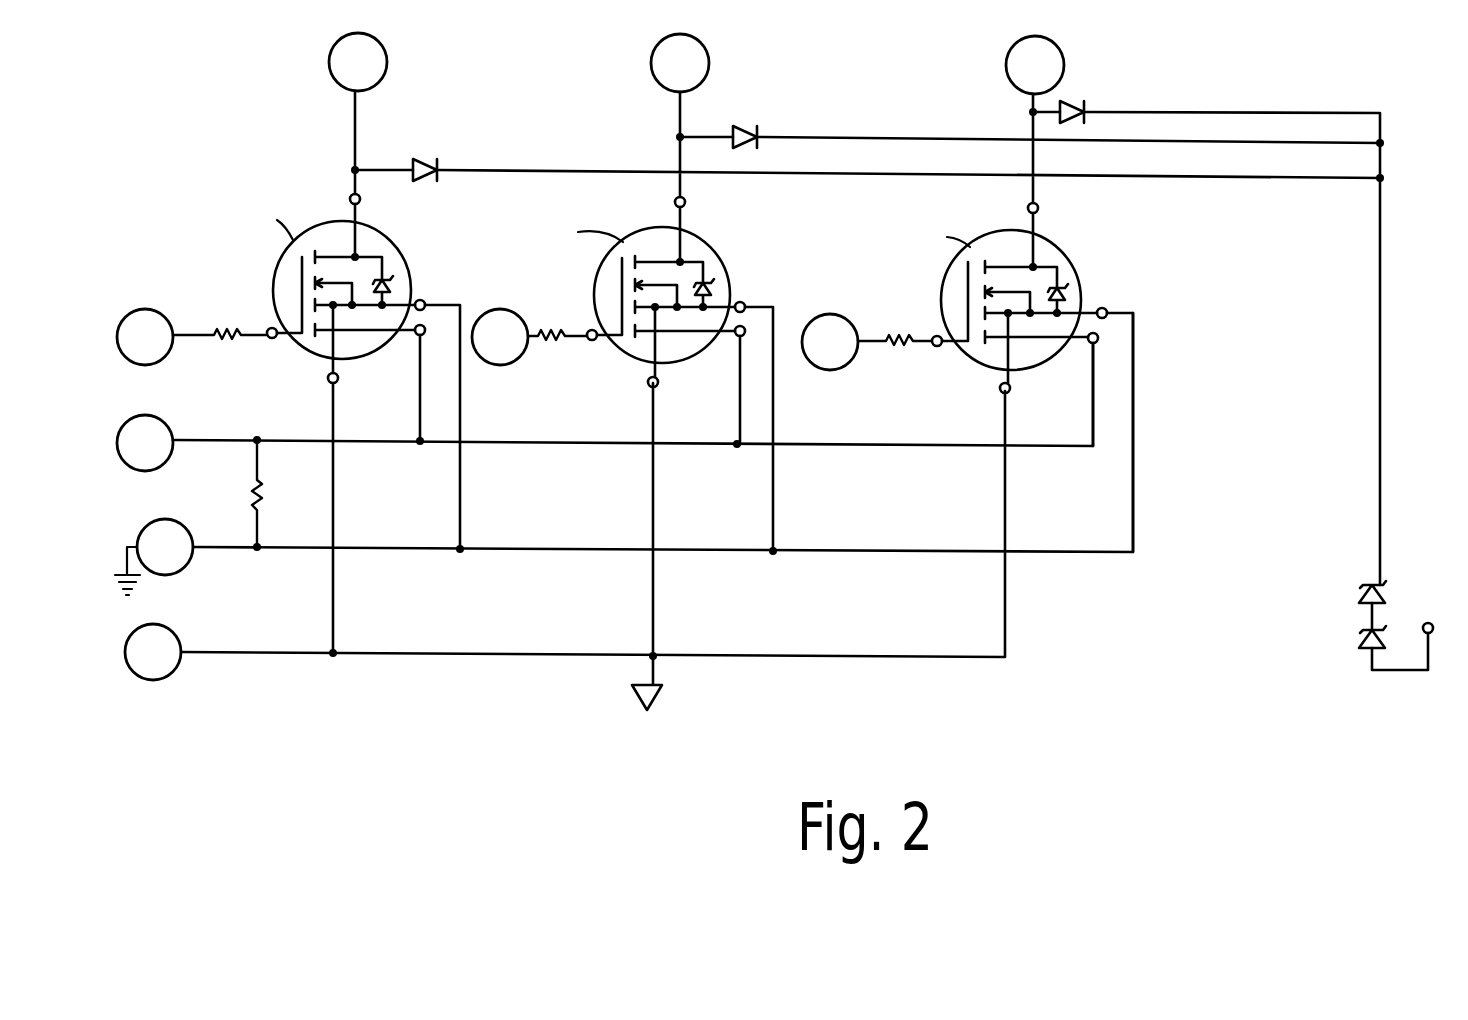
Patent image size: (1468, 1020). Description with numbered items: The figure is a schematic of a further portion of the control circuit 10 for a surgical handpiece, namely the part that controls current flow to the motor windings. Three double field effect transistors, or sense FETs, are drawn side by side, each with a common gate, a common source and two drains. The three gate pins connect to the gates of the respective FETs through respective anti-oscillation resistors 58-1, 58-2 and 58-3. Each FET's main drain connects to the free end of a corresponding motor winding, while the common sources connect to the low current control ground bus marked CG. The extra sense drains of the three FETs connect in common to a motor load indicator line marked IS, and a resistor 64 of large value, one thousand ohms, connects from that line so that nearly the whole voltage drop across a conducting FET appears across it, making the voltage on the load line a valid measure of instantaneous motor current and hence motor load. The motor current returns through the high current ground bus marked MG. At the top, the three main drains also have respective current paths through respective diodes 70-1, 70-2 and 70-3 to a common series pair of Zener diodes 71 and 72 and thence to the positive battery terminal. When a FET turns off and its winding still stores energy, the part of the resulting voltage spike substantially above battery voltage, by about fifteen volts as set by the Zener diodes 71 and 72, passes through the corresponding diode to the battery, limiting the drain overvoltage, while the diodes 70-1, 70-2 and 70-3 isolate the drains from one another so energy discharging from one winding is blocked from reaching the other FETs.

The control circuit 10 is at (1073, 627).
The diode 70-1 is at (425, 160).
The diode 70-2 is at (745, 126).
The diode 70-3 is at (1078, 101).
The anti-oscillation resistor 58-1 is at (226, 341).
The anti-oscillation resistor 58-2 is at (550, 342).
The anti-oscillation resistor 58-3 is at (895, 347).
The resistor 64 is at (250, 500).
The Zener diode 71 is at (1358, 588).
The Zener diode 72 is at (1358, 640).